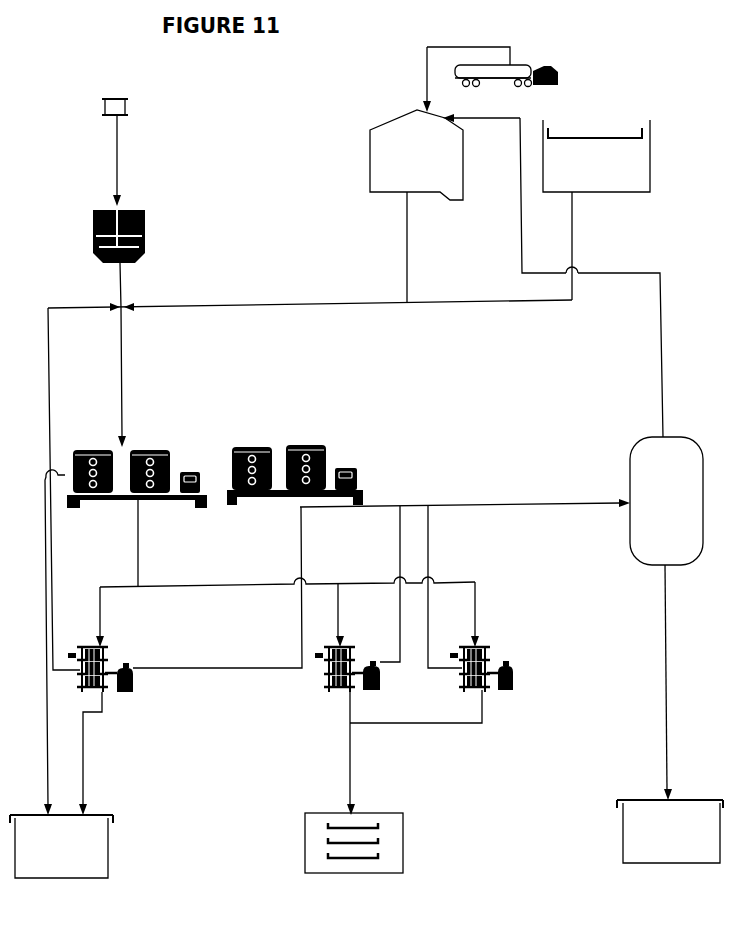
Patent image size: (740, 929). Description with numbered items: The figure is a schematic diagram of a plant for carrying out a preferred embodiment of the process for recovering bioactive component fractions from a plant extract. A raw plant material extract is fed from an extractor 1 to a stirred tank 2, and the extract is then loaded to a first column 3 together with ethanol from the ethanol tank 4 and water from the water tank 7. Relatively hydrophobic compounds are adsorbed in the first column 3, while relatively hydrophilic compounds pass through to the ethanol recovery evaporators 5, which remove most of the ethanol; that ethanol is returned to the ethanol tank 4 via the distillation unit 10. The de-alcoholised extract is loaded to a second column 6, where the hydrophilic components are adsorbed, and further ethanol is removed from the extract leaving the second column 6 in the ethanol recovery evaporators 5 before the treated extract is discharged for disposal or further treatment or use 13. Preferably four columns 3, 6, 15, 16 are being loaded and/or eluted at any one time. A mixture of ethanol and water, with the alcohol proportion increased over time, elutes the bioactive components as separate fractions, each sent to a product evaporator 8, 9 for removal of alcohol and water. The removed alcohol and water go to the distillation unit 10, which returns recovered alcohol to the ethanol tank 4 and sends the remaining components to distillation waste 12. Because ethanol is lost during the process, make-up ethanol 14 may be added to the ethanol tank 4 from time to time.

The extractor 1 is at (123, 151).
The stirred tank 2 is at (133, 328).
The first column 3 is at (93, 461).
The ethanol tank 4 is at (506, 242).
The ethanol recovery evaporators 5 is at (115, 731).
The second column 6 is at (150, 461).
The water tank 7 is at (596, 210).
The product evaporator 8 is at (394, 731).
The product evaporator 9 is at (485, 685).
The distillation unit 10 is at (501, 618).
The distillation waste 12 is at (670, 845).
The treated extract discharge 13 is at (61, 858).
The make-up ethanol 14 is at (447, 472).
The column 15 is at (252, 454).
The column 16 is at (306, 452).